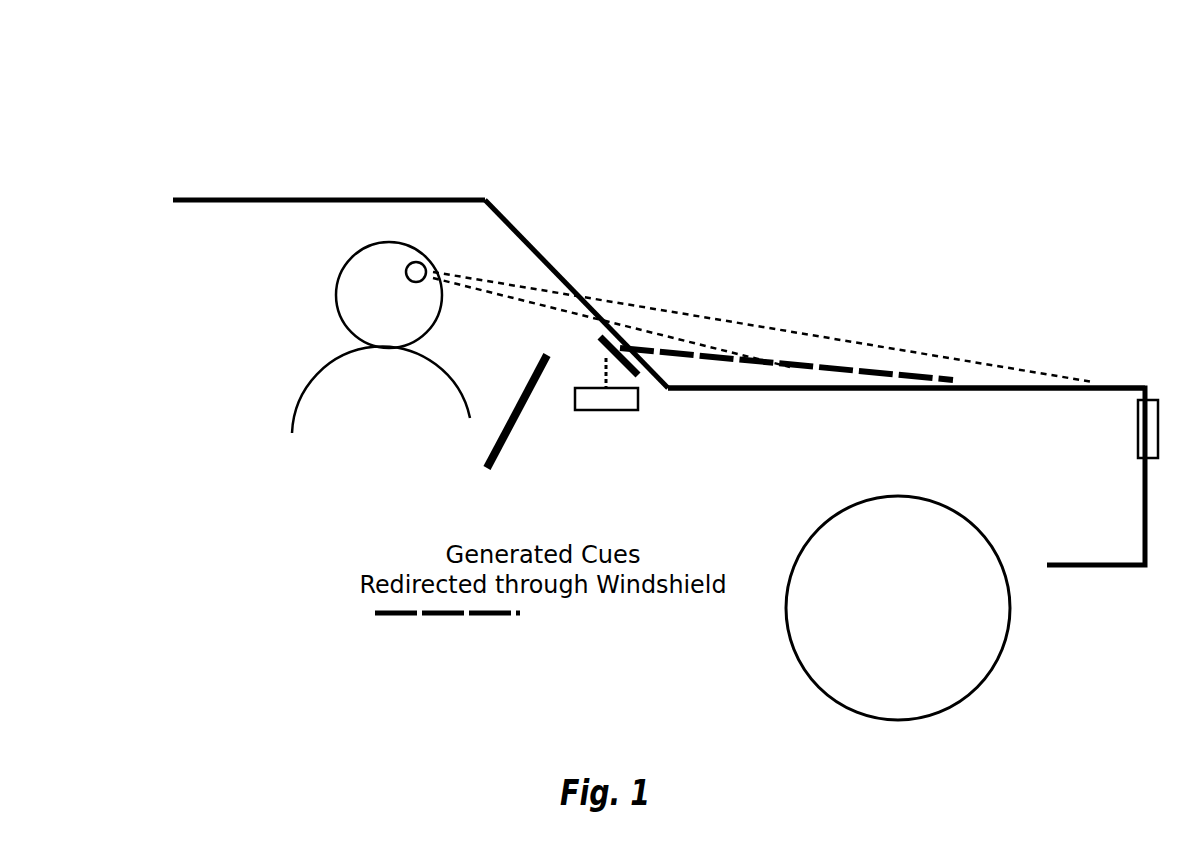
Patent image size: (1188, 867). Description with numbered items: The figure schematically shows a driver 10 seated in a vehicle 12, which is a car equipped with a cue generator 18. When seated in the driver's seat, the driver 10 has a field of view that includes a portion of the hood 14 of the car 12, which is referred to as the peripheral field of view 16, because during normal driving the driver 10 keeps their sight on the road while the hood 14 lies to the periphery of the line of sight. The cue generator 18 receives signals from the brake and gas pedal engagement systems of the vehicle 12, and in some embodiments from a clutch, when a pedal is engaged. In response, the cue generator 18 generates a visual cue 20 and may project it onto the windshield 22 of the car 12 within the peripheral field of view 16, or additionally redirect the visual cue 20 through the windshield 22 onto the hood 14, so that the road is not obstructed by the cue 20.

The driver 10 is at (297, 304).
The vehicle 12 is at (534, 100).
The hood 14 is at (1003, 390).
The peripheral field of view 16 is at (683, 343).
The cue generator 18 is at (610, 410).
The visual cue 20 is at (953, 382).
The windshield 22 is at (543, 262).